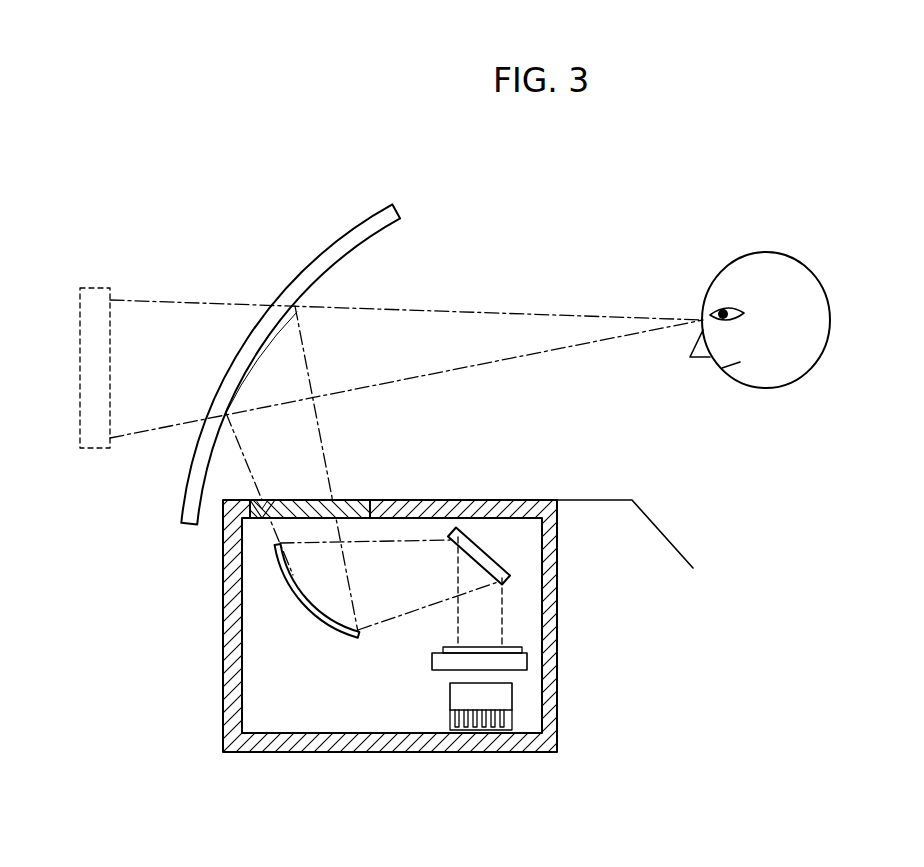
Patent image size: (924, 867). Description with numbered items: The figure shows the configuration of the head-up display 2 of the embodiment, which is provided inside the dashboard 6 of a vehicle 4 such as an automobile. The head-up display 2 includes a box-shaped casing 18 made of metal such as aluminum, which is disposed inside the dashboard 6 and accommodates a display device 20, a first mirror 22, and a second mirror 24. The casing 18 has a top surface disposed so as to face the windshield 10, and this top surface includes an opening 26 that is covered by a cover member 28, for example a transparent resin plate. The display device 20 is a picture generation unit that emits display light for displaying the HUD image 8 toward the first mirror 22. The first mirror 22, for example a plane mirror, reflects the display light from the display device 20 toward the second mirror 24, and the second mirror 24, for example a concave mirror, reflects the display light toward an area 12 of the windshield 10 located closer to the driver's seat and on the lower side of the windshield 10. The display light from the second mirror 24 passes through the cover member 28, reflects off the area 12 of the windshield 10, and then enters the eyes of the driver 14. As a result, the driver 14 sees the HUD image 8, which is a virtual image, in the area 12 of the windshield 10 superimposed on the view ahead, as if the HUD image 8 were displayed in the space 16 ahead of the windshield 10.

The head-up display 2 is at (588, 553).
The vehicle 4 is at (502, 195).
The dashboard 6 is at (597, 500).
The HUD image 8 is at (96, 288).
The windshield 10 is at (380, 220).
The area 12 is at (297, 312).
The driver 14 is at (802, 263).
The space 16 is at (211, 242).
The casing 18 is at (558, 612).
The display device 20 is at (523, 675).
The first mirror 22 is at (480, 548).
The second mirror 24 is at (320, 622).
The opening 26 is at (260, 519).
The cover member 28 is at (352, 499).